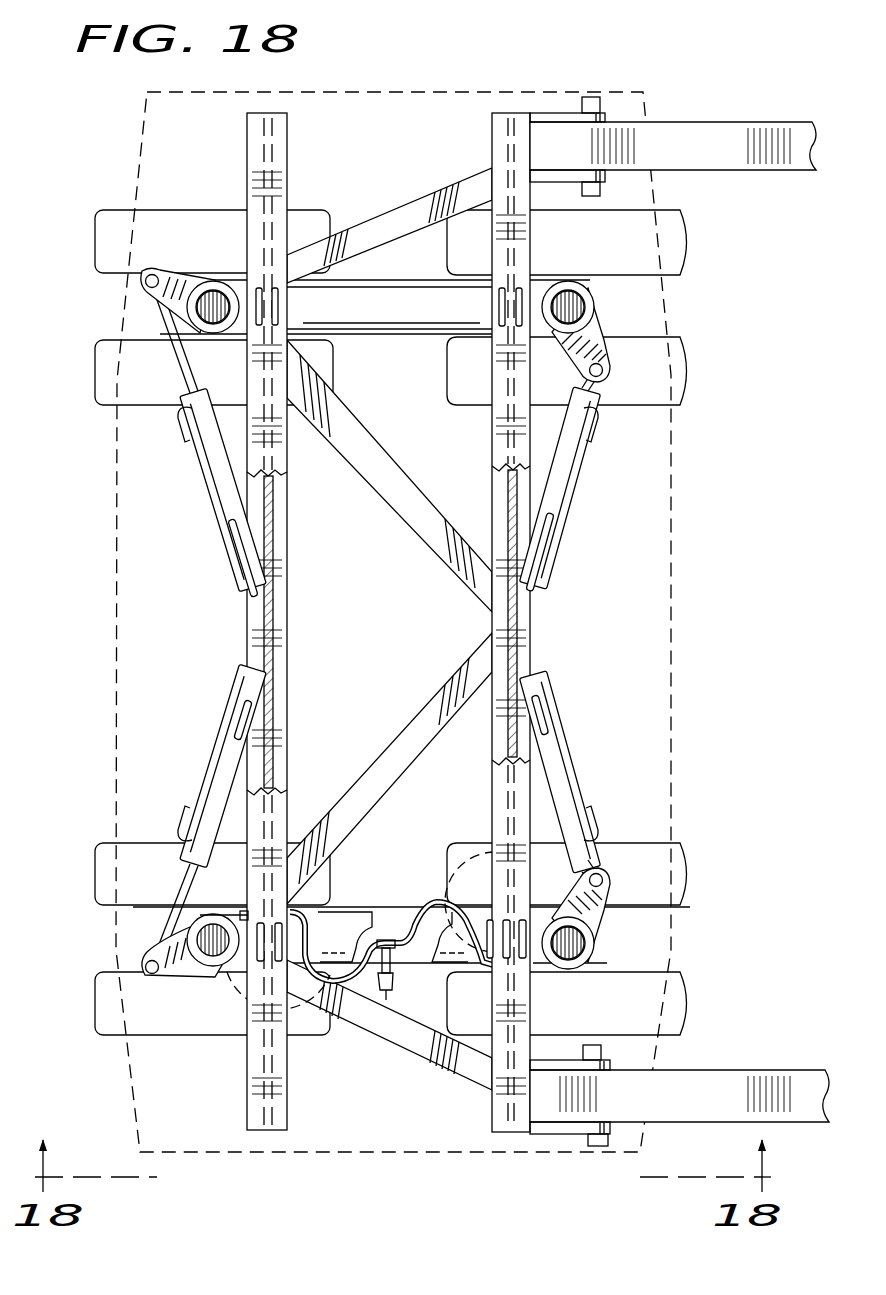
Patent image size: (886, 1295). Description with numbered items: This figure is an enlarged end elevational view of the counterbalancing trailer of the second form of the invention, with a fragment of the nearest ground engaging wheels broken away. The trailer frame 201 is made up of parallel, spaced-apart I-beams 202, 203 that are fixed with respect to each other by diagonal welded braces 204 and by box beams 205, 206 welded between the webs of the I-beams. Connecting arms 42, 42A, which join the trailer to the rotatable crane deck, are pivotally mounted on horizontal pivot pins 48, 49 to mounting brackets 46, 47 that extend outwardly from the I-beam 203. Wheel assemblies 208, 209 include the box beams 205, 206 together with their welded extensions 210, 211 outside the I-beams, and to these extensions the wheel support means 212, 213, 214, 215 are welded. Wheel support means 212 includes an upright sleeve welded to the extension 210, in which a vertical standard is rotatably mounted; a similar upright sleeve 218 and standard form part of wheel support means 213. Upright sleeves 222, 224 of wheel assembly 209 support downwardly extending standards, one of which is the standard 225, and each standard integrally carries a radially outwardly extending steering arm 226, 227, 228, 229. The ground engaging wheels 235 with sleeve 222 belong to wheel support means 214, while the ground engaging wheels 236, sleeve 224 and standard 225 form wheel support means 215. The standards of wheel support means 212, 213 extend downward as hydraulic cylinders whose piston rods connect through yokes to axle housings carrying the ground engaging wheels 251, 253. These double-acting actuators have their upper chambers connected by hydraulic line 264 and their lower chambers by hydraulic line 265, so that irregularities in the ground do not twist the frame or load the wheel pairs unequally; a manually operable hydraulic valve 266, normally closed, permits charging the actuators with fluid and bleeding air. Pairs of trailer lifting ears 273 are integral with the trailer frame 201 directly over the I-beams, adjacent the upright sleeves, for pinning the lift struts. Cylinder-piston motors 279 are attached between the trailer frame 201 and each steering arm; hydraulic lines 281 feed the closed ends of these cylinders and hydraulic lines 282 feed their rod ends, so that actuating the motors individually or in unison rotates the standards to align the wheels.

The connecting arm 42 is at (783, 1067).
The connecting arm 42A is at (760, 135).
The mounting bracket 46 is at (570, 1067).
The mounting bracket 47 is at (606, 170).
The horizontal pivot pin 48 is at (598, 1150).
The horizontal pivot pin 49 is at (594, 96).
The trailer frame 201 is at (224, 631).
The I-beam 202 is at (287, 648).
The I-beam 203 is at (493, 615).
The diagonal welded brace 204 is at (400, 500).
The box beam 205 is at (355, 895).
The box beam 206 is at (410, 310).
The wheel assembly 208 is at (612, 952).
The wheel assembly 209 is at (145, 298).
The box beam extension 210 is at (540, 957).
The box beam extension 211 is at (242, 272).
The wheel support means 212 is at (207, 976).
The wheel support means 213 is at (607, 928).
The wheel support means 214 is at (187, 313).
The wheel support means 215 is at (607, 299).
The upright sleeve 218 is at (613, 908).
The upright sleeve 222 is at (200, 337).
The upright sleeve 224 is at (585, 282).
The vertical downwardly extending standard 225 is at (583, 292).
The steering arm 226 is at (143, 945).
The steering arm 227 is at (600, 893).
The steering arm 228 is at (190, 276).
The steering arm 229 is at (590, 342).
The ground engaging wheel 235 is at (95, 253).
The ground engaging wheel 236 is at (687, 353).
The ground engaging wheel 251 is at (93, 868).
The ground engaging wheel 253 is at (680, 858).
The hydraulic line 264 is at (338, 926).
The hydraulic line 265 is at (467, 857).
The manually operable hydraulic valve 266 is at (393, 1000).
The trailer lifting ear 273 is at (279, 309).
The cylinder-piston motor 279 is at (212, 445).
The hydraulic line 281 is at (243, 540).
The hydraulic line 282 is at (210, 505).